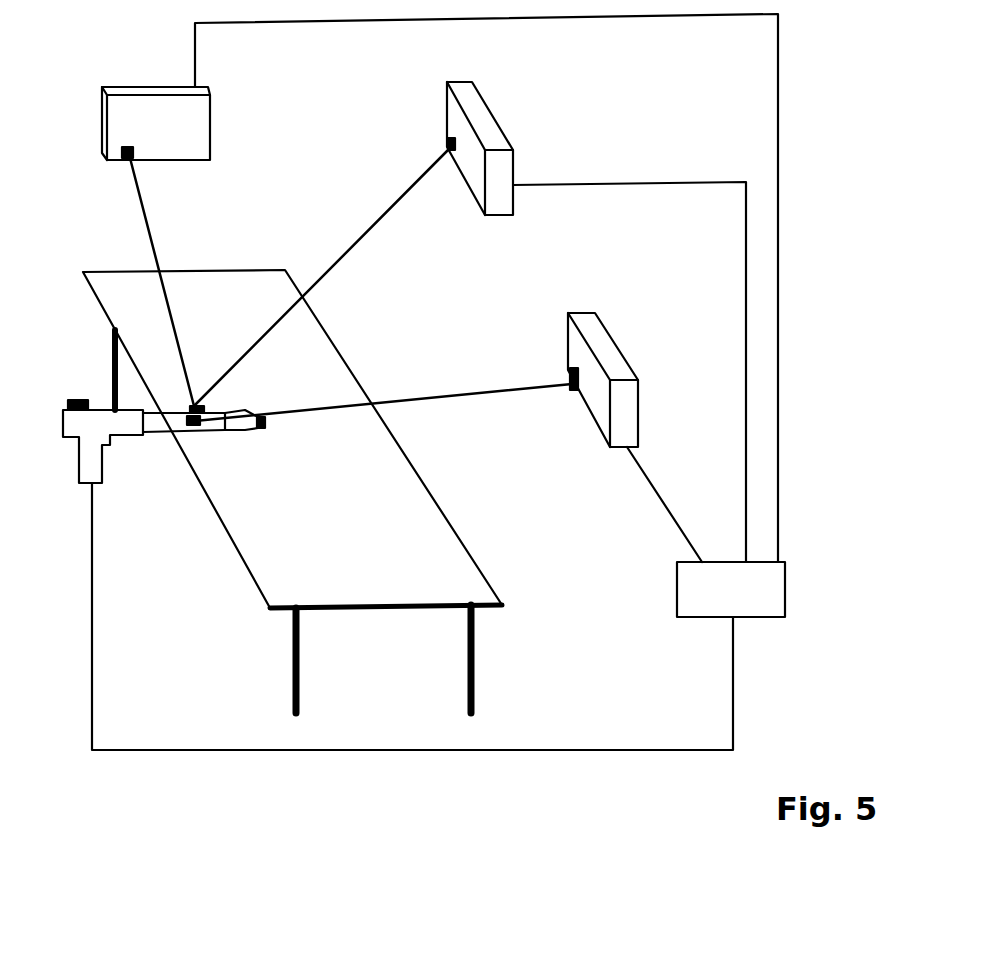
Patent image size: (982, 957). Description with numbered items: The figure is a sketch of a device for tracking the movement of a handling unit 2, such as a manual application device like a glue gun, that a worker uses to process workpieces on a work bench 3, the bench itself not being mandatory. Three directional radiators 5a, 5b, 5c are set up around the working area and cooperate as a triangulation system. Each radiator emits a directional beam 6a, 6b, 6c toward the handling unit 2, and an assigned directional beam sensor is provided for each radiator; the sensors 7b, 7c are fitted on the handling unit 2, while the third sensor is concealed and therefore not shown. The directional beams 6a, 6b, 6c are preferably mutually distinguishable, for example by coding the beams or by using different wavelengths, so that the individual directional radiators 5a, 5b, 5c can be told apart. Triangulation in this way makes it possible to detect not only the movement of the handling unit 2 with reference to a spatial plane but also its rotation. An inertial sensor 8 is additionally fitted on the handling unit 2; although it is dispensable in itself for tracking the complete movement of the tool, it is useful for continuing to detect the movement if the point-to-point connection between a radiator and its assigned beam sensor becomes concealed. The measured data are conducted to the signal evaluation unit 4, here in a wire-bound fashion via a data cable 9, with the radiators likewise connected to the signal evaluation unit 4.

The handling unit 2 is at (78, 466).
The work bench 3 is at (457, 548).
The signal evaluation unit 4 is at (731, 589).
The first directional radiator 5a is at (136, 83).
The second directional radiator 5b is at (497, 110).
The third directional radiator 5c is at (618, 347).
The first directional beam 6a is at (145, 213).
The second directional beam 6b is at (363, 245).
The third directional beam 6c is at (483, 397).
The directional beam sensor 7b is at (194, 406).
The directional beam sensor 7c is at (193, 426).
The inertial sensor 8 is at (70, 398).
The data cable 9 is at (92, 657).